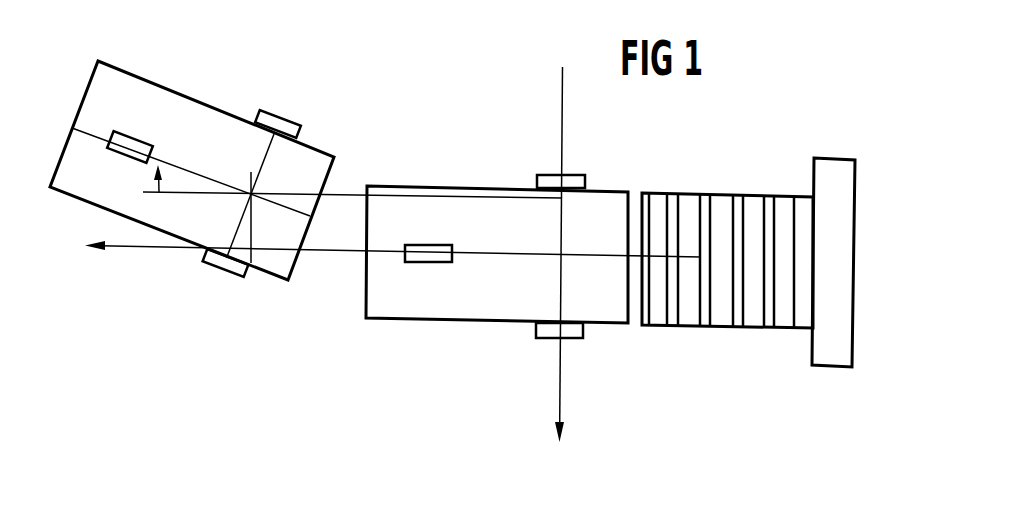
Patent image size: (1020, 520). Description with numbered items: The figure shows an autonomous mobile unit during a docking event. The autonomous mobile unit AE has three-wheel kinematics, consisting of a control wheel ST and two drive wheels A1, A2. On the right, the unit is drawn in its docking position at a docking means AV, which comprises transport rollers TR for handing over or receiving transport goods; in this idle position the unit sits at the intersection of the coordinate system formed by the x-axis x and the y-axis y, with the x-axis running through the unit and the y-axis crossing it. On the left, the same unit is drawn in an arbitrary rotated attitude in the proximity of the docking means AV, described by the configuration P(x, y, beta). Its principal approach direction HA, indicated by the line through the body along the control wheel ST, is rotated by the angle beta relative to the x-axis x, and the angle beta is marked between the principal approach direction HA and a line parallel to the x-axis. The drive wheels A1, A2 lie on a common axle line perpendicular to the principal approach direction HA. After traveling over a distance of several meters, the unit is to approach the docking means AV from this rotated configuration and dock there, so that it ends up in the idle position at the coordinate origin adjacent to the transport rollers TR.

The principal approach direction HA is at (93, 128).
The control wheel ST is at (133, 140).
The drive wheel A1 is at (273, 121).
The drive wheel A2 is at (227, 269).
The autonomous mobile unit AE is at (443, 305).
The transport rollers TR is at (687, 315).
The docking means AV is at (832, 168).
The rotated angle beta is at (152, 180).
The x-axis x is at (393, 258).
The y-axis y is at (566, 255).
The configuration P is at (427, 99).